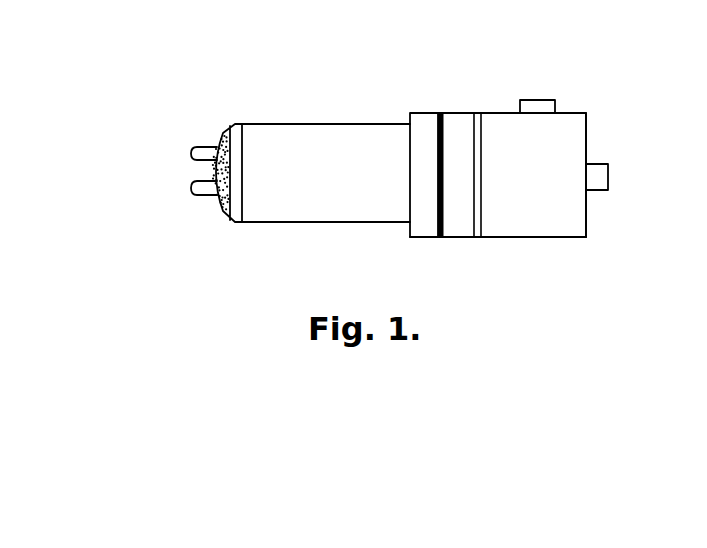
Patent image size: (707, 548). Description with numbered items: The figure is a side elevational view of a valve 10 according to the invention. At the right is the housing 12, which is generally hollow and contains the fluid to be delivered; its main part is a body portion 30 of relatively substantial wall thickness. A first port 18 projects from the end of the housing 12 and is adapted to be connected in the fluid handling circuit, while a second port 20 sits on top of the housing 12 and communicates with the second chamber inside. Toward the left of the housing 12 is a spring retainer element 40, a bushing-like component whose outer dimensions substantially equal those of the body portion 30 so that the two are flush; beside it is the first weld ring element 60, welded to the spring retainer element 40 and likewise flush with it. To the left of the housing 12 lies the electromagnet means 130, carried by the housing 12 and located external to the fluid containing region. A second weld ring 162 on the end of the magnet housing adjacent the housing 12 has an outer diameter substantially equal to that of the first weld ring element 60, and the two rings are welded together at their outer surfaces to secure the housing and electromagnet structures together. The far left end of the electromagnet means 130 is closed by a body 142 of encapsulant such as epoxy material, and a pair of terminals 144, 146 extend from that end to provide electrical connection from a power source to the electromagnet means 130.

The valve 10 is at (410, 72).
The housing 12 is at (507, 238).
The first port 18 is at (610, 171).
The second port 20 is at (547, 100).
The body portion 30 is at (580, 133).
The spring retainer element 40 is at (480, 113).
The first weld ring element 60 is at (455, 113).
The electromagnet means 130 is at (280, 126).
The body of encapsulant 142 is at (221, 136).
The terminal 144 is at (199, 147).
The terminal 146 is at (201, 196).
The second weld ring 162 is at (420, 112).